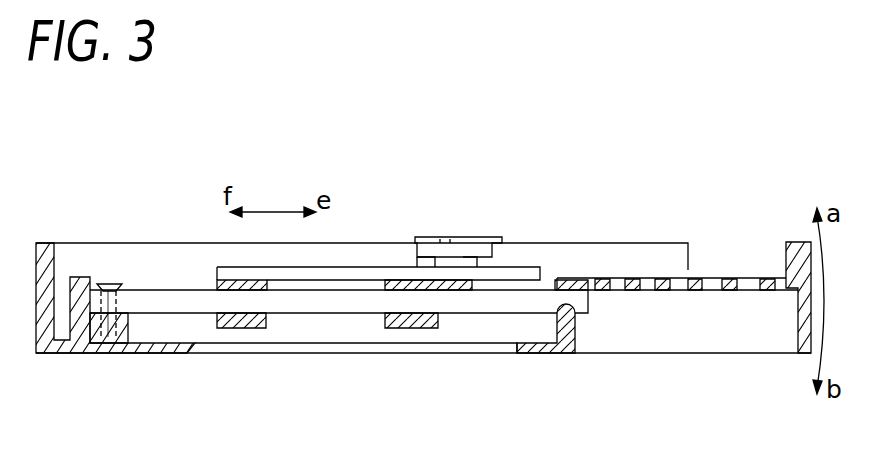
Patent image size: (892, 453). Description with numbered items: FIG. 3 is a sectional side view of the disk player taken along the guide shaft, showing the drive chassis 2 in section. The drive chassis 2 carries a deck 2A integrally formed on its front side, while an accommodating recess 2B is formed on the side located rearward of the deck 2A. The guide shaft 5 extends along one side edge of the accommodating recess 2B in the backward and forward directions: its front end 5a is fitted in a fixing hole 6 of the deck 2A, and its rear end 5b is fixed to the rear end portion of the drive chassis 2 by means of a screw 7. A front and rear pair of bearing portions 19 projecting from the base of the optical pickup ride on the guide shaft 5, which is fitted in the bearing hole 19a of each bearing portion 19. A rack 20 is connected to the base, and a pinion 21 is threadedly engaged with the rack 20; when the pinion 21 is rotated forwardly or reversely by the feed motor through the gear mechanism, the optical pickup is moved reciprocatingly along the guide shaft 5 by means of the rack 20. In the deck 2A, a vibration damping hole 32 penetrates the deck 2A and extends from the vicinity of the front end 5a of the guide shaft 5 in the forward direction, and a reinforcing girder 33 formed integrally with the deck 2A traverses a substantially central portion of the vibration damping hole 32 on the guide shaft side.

The drive chassis 2 is at (82, 243).
The deck 2A is at (745, 288).
The accommodating recess 2B is at (303, 336).
The guide shaft 5 is at (481, 313).
The front end of guide shaft 5a is at (582, 297).
The rear end of guide shaft 5b is at (100, 342).
The fixing hole 6 is at (578, 314).
The screw 7 is at (108, 283).
The bearing portion 19 is at (240, 328).
The bearing hole 19a is at (218, 289).
The rack 20 is at (521, 263).
The pinion 21 is at (407, 263).
The vibration damping hole 32 is at (628, 290).
The reinforcing girder 33 is at (657, 289).